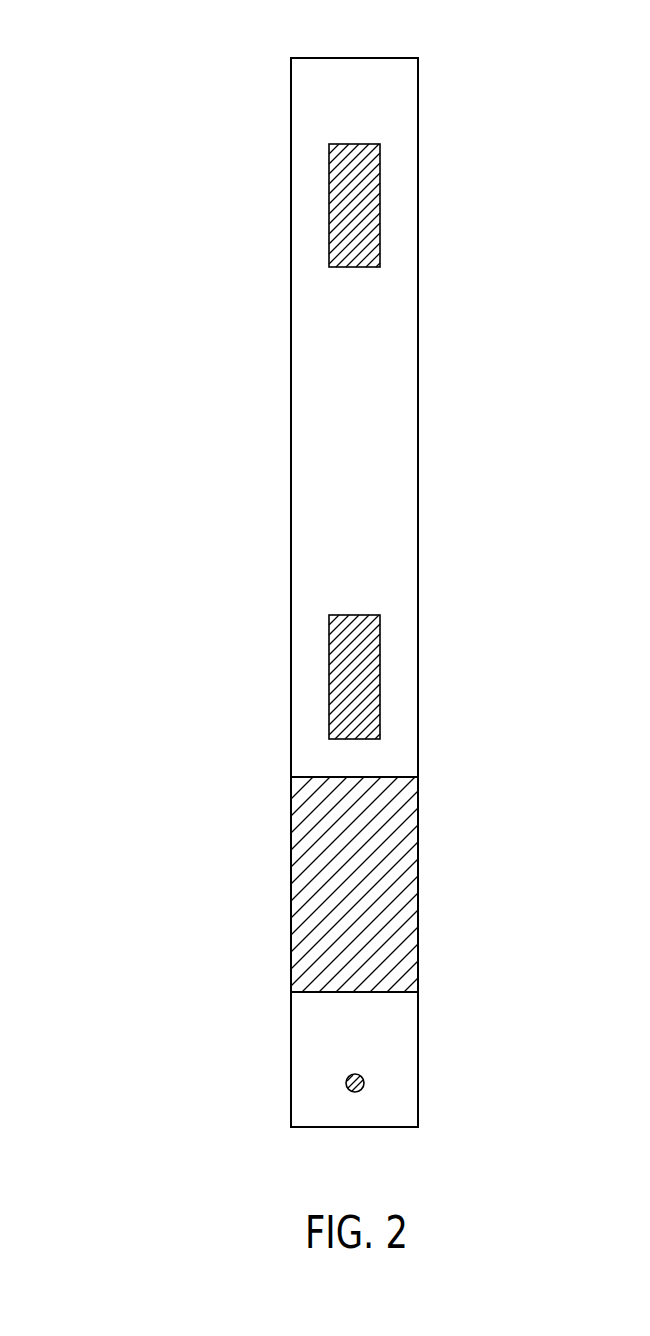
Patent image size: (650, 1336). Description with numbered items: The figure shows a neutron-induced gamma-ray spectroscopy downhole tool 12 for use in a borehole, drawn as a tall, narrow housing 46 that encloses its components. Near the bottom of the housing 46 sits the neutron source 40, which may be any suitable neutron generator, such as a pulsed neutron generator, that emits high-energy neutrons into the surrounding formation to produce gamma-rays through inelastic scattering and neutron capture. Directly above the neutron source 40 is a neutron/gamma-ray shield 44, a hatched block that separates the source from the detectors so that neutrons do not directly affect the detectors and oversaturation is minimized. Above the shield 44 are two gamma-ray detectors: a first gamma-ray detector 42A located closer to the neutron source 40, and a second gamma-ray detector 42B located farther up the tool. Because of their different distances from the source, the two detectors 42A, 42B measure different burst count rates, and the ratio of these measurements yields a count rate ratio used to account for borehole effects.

The downhole tool 12 is at (147, 65).
The housing 46 is at (291, 428).
The second gamma-ray detector 42B is at (380, 199).
The first gamma-ray detector 42A is at (380, 670).
The neutron/gamma-ray shield 44 is at (396, 887).
The neutron source 40 is at (363, 1075).